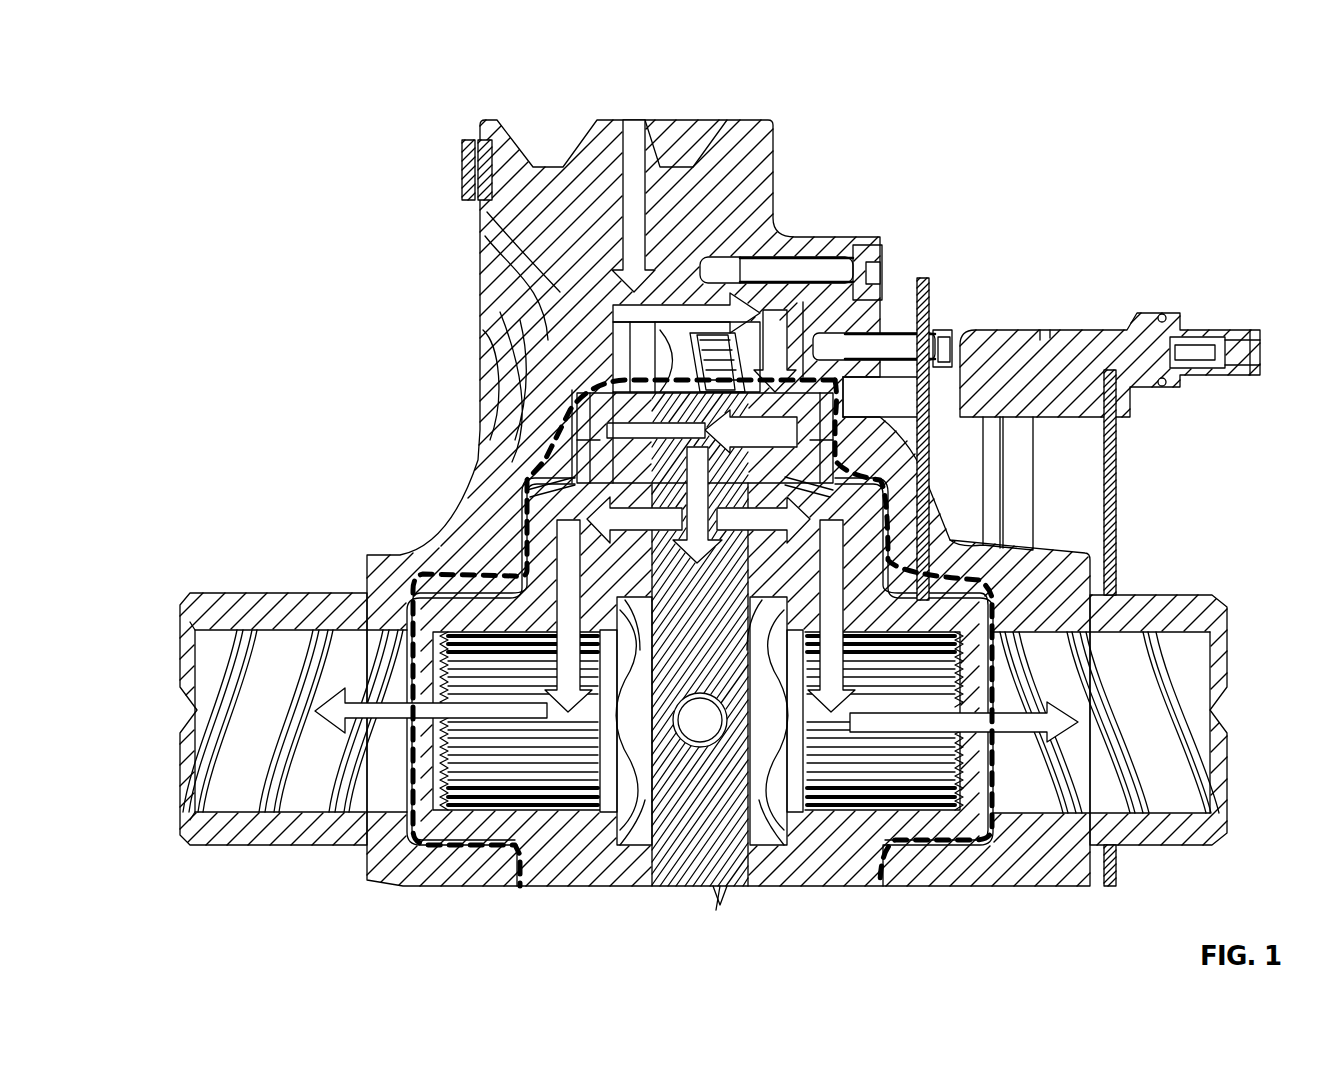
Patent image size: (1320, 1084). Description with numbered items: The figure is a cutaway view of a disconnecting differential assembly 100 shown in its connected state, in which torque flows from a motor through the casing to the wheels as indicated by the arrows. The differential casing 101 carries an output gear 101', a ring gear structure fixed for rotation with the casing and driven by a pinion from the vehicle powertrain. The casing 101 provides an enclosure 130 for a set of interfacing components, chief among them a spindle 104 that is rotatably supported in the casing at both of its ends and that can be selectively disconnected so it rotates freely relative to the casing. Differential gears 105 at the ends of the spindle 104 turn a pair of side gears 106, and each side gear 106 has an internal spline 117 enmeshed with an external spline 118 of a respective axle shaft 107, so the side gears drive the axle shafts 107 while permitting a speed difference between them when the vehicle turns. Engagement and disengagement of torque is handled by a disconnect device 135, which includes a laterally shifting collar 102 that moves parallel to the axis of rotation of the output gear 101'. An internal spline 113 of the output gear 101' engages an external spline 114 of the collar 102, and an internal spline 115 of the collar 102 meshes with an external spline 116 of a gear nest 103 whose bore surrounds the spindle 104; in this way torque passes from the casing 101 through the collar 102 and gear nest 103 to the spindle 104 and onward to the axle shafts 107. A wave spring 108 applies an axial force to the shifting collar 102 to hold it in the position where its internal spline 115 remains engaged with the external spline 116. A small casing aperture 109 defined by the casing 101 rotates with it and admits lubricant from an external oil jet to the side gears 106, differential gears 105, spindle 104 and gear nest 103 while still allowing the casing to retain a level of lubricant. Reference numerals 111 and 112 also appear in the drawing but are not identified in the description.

The differential assembly 100 is at (226, 78).
The differential casing 101 is at (720, 503).
The output gear 101' is at (715, 83).
The laterally shifting collar 102 is at (800, 387).
The gear nest 103 is at (920, 468).
The spindle 104 is at (590, 430).
The differential gears 105 is at (517, 490).
The side gears 106 is at (505, 553).
The axle shafts 107 is at (345, 640).
The wave spring 108 is at (617, 367).
The casing aperture 109 is at (550, 465).
The outer ring 111 is at (467, 175).
The inner ring 112 is at (490, 140).
The internal spline 113 is at (777, 310).
The external spline 114 is at (800, 303).
The internal spline 115 is at (813, 347).
The external spline 116 is at (960, 343).
The internal spline 117 is at (487, 810).
The external spline 118 is at (447, 790).
The enclosure 130 is at (925, 852).
The disconnect device 135 is at (912, 212).